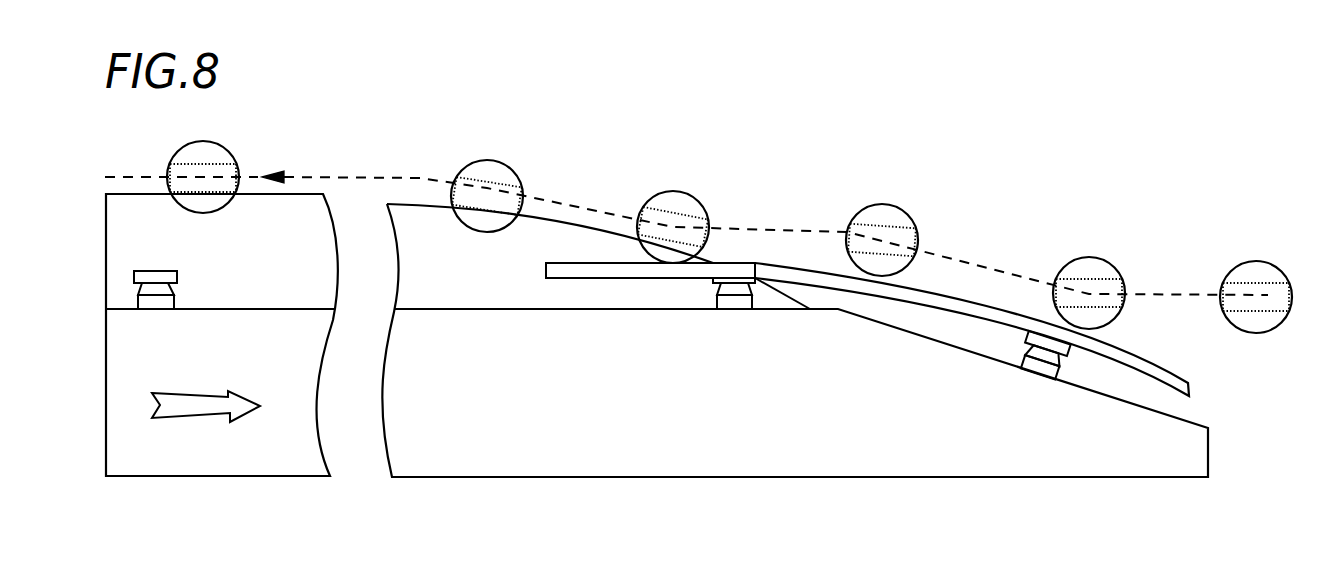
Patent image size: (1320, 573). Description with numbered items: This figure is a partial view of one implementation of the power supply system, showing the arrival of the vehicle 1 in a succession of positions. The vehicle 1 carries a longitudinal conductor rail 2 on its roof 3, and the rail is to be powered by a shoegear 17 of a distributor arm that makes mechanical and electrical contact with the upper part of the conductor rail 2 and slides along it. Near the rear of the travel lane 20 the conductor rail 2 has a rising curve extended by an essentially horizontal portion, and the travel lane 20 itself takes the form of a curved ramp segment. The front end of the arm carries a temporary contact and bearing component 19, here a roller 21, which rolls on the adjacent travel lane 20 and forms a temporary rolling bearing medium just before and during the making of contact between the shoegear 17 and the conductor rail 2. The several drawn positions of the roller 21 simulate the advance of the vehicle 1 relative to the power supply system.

The vehicle 1 is at (1235, 396).
The conductor rail 2 is at (153, 191).
The roof 3 is at (548, 207).
The shoegear 17 is at (218, 166).
The temporary contact and bearing component 19 is at (729, 206).
The travel lane 20 is at (970, 287).
The roller 21 is at (240, 134).